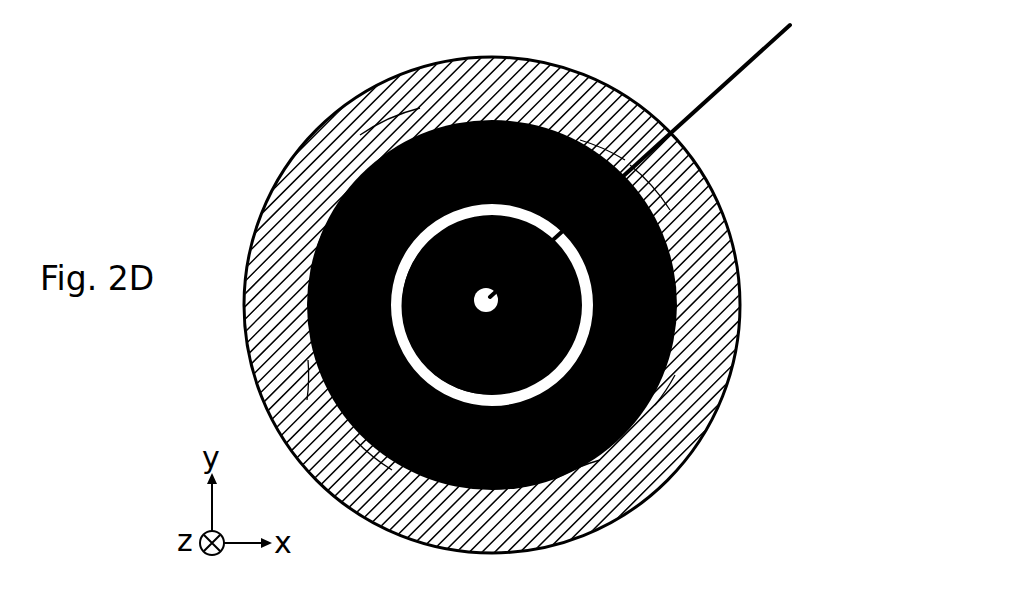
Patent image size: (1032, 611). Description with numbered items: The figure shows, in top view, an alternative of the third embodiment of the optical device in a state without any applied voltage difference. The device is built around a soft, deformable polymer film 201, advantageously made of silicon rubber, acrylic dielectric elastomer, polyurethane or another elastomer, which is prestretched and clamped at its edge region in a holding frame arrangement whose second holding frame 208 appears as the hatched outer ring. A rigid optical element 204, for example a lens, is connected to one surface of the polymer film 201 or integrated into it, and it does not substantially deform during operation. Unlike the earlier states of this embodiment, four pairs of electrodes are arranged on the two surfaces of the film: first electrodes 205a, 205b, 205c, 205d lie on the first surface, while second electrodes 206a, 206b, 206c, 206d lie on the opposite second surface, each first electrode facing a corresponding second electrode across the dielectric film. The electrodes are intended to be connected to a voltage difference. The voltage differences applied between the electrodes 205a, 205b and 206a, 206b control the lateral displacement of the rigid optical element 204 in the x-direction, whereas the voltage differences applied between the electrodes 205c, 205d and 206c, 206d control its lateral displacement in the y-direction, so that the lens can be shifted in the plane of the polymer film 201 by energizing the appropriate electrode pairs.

The polymer film 201 is at (612, 427).
The rigid optical element 204 is at (675, 152).
The first electrode 205a is at (653, 197).
The first electrode 205b is at (328, 392).
The first electrode 205c is at (392, 142).
The first electrode 205d is at (580, 470).
The second electrode 206a is at (657, 400).
The second electrode 206b is at (320, 220).
The second electrode 206c is at (607, 153).
The second electrode 206d is at (382, 468).
The second holding frame 208 is at (738, 310).